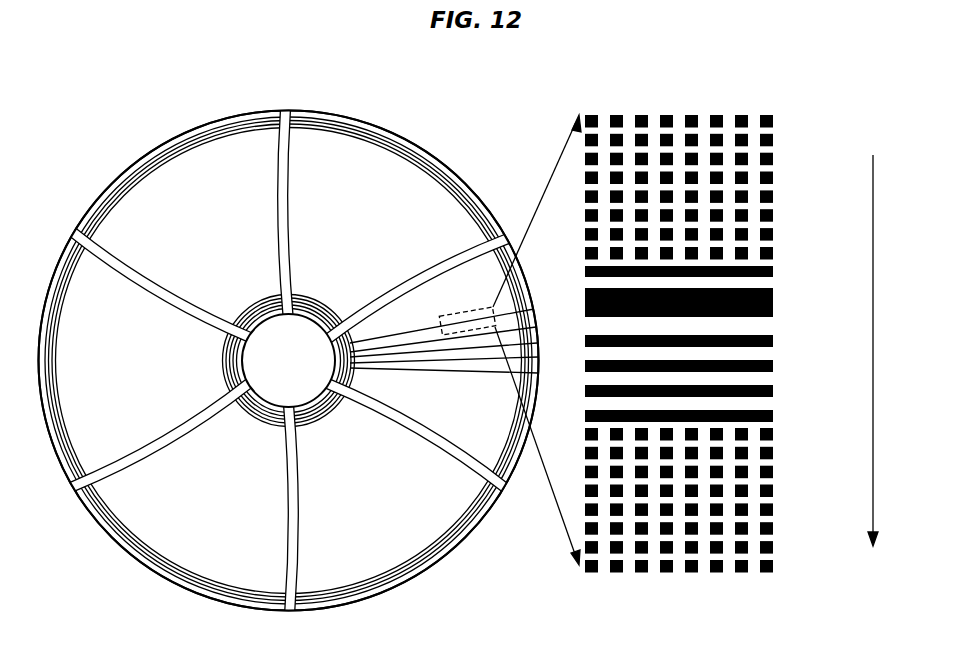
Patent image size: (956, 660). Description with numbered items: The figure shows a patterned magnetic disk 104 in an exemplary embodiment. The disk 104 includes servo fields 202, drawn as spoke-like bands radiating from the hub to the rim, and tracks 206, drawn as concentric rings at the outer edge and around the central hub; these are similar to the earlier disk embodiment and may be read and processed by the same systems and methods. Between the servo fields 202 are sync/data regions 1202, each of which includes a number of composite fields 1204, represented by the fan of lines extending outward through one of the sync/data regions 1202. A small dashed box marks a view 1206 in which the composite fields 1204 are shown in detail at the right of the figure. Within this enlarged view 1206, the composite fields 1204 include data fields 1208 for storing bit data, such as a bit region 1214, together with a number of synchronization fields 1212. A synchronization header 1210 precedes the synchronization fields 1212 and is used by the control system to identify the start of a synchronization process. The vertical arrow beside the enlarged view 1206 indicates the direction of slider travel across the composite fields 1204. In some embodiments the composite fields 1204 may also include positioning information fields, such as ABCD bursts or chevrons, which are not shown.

The patterned magnetic disk 104 is at (223, 82).
The servo fields 202 is at (288, 110).
The tracks 206 is at (68, 290).
The sync/data regions 1202 is at (261, 347).
The composite fields 1204 is at (424, 371).
The view 1206 is at (465, 313).
The data fields 1208 is at (788, 115).
The synchronization header 1210 is at (788, 266).
The synchronization fields 1212 is at (788, 335).
The bit region 1214 is at (592, 114).